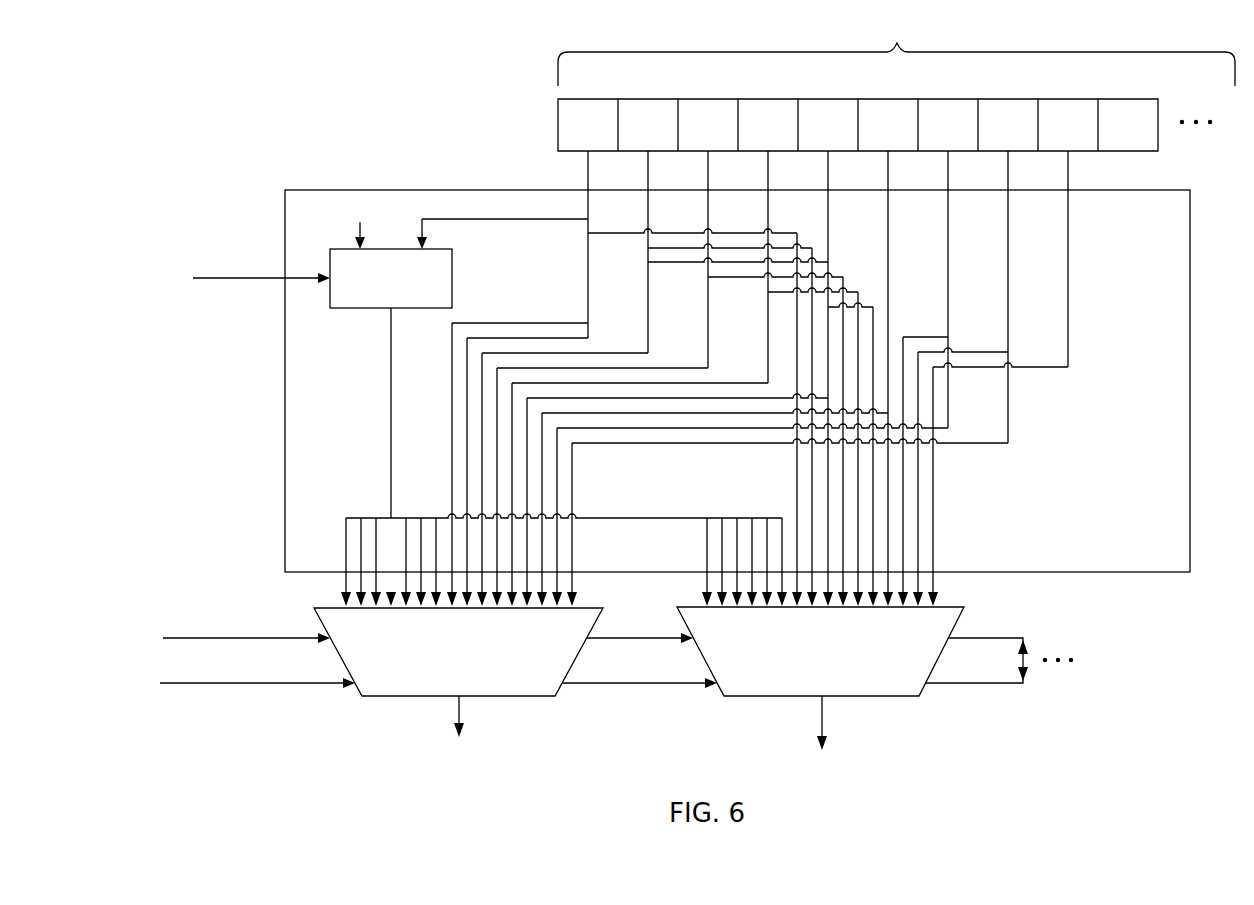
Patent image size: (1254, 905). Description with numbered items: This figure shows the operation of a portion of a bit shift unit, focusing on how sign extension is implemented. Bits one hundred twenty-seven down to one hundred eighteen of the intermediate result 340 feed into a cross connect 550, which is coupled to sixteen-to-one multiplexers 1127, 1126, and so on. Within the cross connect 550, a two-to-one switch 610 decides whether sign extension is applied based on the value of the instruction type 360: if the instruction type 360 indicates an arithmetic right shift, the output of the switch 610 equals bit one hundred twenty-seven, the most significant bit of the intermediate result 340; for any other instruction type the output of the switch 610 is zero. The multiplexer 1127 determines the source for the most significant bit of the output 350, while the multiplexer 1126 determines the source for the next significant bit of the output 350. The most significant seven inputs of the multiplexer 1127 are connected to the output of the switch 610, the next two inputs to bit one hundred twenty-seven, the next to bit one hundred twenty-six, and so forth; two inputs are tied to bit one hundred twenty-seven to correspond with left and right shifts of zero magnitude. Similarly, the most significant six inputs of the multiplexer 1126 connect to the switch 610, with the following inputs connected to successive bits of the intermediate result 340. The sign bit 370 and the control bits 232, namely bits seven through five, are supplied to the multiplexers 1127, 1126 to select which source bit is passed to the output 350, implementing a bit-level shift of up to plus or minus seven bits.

The intermediate result 340 is at (896, 81).
The cross connect 550 is at (737, 378).
The 2-to-1 switch 610 is at (459, 358).
The instruction type 360 is at (247, 258).
The sign bit 370 is at (246, 629).
The control bits [7:5] 232 is at (257, 672).
The 16-to-1 multiplexer 1127 is at (515, 652).
The 16-to-1 multiplexer 1126 is at (875, 651).
The output 350 is at (635, 737).